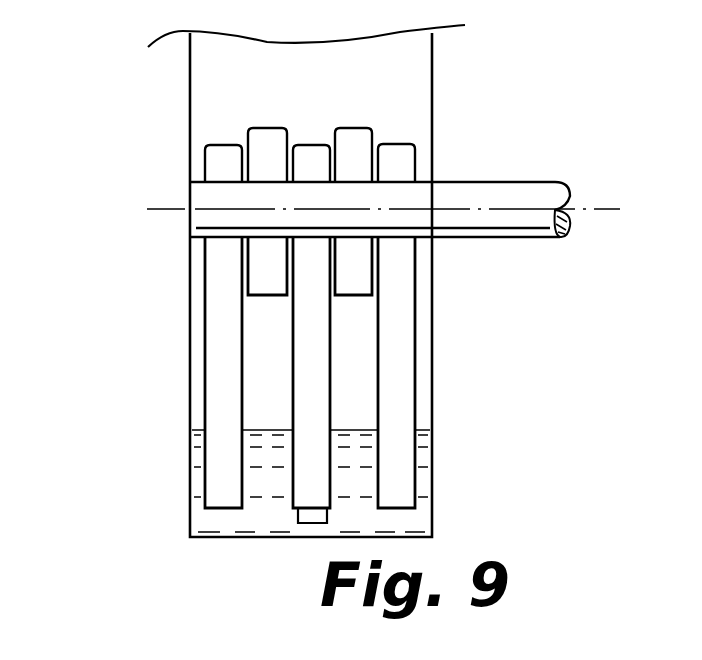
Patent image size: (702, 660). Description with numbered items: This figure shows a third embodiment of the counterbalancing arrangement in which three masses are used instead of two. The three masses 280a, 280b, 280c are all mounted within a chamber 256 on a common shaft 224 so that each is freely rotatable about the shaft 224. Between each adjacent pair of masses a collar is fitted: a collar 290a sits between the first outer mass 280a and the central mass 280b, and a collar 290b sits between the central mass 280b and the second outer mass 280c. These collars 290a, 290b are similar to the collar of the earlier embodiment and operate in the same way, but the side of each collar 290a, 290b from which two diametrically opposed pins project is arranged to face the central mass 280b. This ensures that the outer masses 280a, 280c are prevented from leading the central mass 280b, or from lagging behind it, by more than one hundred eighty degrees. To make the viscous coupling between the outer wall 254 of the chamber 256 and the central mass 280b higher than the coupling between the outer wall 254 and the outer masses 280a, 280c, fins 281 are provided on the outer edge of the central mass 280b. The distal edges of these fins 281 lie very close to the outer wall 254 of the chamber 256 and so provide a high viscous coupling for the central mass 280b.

The chamber 256 is at (405, 85).
The outer wall 254 is at (430, 505).
The shaft 224 is at (485, 200).
The mass 280a is at (218, 313).
The central mass 280b is at (300, 398).
The mass 280c is at (397, 375).
The collar 290a is at (260, 137).
The collar 290b is at (350, 145).
The fins 281 is at (303, 520).